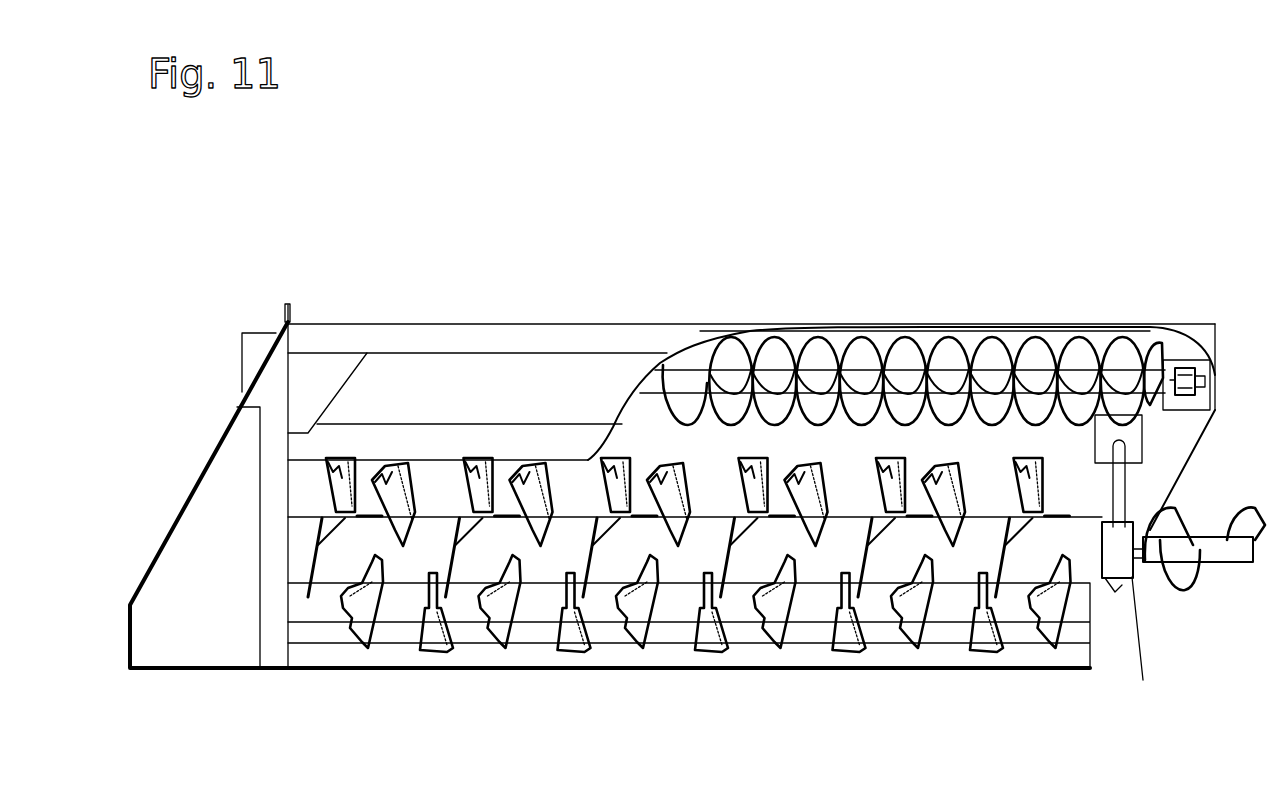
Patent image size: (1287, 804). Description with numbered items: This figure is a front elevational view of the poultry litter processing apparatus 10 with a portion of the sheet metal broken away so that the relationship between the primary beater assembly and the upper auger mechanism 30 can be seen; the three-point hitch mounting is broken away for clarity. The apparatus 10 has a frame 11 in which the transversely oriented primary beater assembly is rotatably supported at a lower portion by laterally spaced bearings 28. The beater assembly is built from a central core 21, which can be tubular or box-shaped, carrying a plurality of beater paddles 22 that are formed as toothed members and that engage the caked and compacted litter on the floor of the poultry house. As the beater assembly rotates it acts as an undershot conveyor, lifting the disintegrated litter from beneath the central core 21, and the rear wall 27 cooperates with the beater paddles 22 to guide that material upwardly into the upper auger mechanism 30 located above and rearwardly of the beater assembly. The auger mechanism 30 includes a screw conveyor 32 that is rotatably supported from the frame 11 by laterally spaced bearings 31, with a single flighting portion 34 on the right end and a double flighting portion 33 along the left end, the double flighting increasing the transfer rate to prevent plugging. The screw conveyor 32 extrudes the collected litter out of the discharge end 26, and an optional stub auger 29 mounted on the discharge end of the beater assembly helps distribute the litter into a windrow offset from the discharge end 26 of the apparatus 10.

The poultry litter processing apparatus 10 is at (522, 243).
The frame 11 is at (458, 330).
The central core 21 is at (818, 572).
The beater paddles 22 is at (637, 610).
The discharge end 26 is at (1106, 652).
The rear wall 27 is at (1165, 454).
The bearings 28 is at (1128, 563).
The stub auger 29 is at (1205, 588).
The upper auger mechanism 30 is at (928, 272).
The bearings 31 is at (1183, 367).
The screw conveyor 32 is at (797, 368).
The double flighting portion 33 is at (1005, 348).
The single flighting portion 34 is at (683, 360).